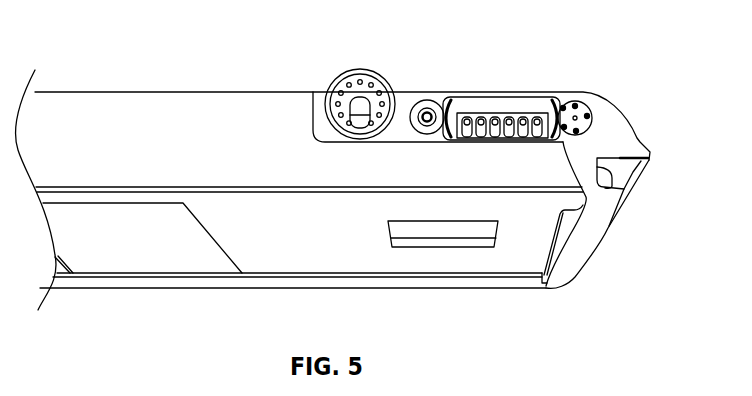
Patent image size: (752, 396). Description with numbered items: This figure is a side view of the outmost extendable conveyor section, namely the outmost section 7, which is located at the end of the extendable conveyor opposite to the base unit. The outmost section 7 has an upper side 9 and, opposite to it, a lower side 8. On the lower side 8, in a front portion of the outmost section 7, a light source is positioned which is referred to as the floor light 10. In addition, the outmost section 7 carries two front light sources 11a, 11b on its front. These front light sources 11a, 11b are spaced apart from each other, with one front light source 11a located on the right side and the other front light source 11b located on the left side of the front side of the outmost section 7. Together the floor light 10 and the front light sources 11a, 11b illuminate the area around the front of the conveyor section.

The outmost section 7 is at (203, 128).
The lower side 8 is at (104, 314).
The upper side 9 is at (110, 66).
The floor light 10 is at (425, 230).
The front light source 11a is at (641, 170).
The front light source 11b is at (580, 265).